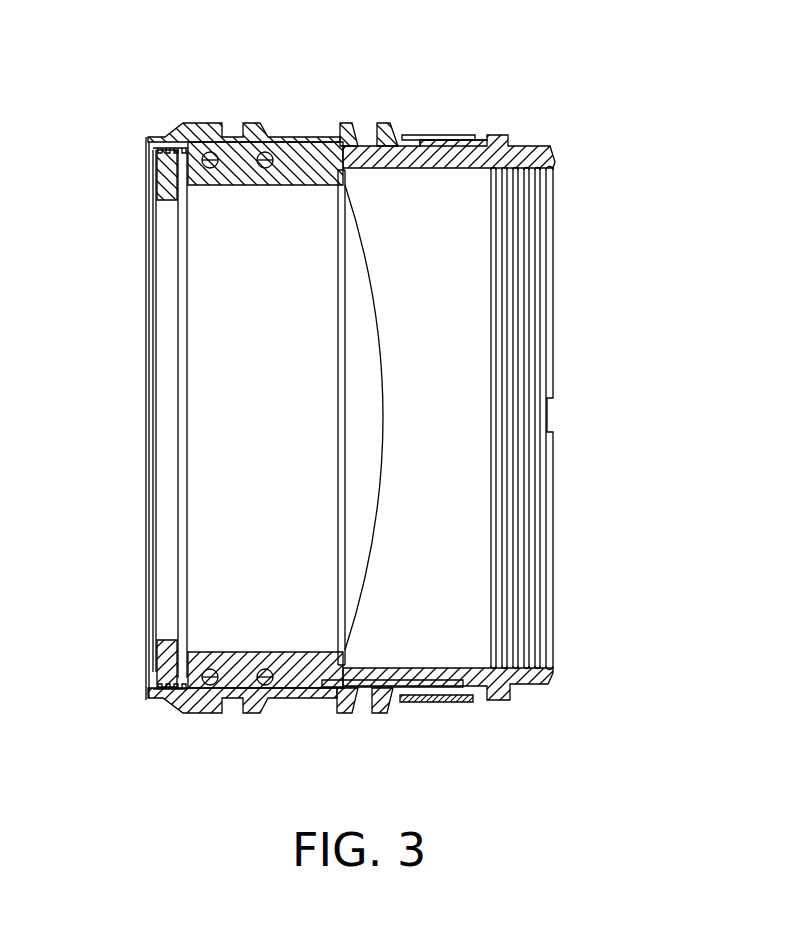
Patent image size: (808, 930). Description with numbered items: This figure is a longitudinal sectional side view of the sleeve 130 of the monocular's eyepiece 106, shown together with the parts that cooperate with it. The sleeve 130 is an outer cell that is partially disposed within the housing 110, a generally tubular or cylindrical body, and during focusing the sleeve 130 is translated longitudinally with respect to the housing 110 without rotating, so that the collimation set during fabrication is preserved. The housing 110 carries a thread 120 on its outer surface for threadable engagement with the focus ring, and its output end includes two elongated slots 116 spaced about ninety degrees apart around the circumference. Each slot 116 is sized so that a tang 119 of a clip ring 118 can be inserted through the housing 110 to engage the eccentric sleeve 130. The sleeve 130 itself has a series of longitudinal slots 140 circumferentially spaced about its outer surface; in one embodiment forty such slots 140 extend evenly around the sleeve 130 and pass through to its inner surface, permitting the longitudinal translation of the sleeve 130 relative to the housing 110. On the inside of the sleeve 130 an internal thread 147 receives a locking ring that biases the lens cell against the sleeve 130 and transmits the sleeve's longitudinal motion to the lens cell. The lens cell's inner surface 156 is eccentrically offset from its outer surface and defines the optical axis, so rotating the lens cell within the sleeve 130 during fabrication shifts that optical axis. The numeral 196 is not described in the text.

The eyepiece 106 is at (652, 166).
The housing 110 is at (312, 700).
The elongated slots 116 is at (460, 150).
The clip ring 118 is at (440, 702).
The tang 119 is at (440, 146).
The thread 120 is at (347, 703).
The sleeve 130 is at (545, 690).
The longitudinal slots 140 is at (343, 128).
The internal thread 147 is at (555, 548).
The inner surface 156 is at (455, 170).
The O-rings 196 is at (200, 715).